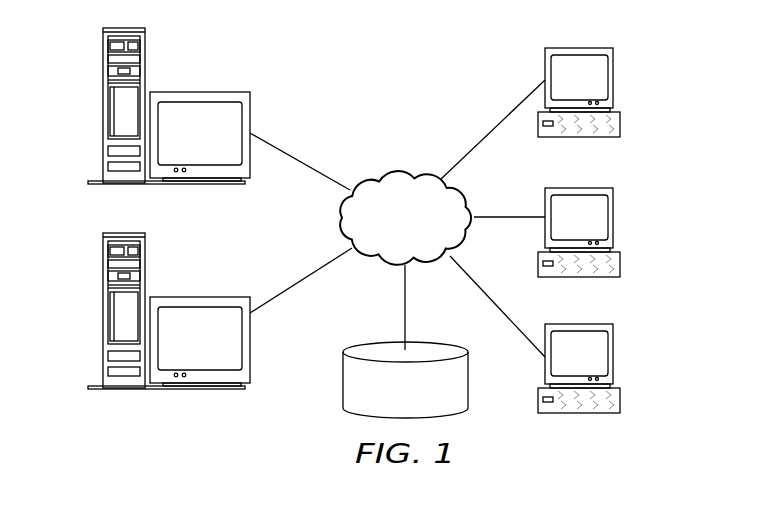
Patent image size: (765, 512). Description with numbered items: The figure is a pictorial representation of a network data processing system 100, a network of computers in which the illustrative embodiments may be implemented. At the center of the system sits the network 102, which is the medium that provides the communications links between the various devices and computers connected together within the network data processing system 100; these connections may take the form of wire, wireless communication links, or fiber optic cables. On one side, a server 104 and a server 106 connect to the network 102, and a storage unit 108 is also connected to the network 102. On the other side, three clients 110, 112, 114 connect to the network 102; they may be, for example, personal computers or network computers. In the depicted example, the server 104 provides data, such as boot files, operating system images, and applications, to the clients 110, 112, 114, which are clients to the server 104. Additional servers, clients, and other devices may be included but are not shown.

The network data processing system 100 is at (456, 67).
The network 102 is at (378, 170).
The server 104 is at (104, 106).
The server 106 is at (145, 326).
The storage unit 108 is at (343, 393).
The client 110 is at (615, 78).
The client 112 is at (608, 245).
The client 114 is at (609, 381).